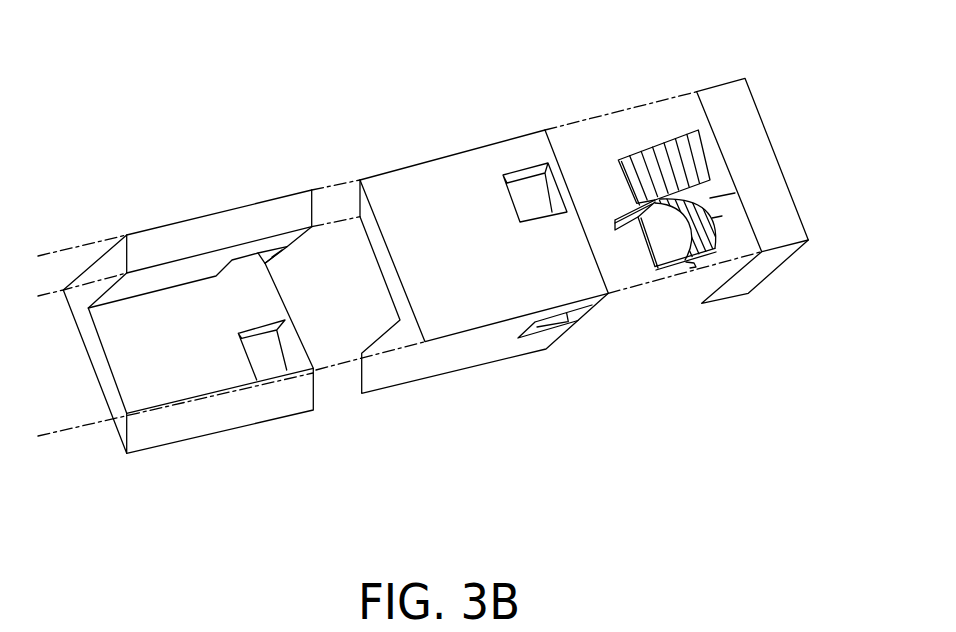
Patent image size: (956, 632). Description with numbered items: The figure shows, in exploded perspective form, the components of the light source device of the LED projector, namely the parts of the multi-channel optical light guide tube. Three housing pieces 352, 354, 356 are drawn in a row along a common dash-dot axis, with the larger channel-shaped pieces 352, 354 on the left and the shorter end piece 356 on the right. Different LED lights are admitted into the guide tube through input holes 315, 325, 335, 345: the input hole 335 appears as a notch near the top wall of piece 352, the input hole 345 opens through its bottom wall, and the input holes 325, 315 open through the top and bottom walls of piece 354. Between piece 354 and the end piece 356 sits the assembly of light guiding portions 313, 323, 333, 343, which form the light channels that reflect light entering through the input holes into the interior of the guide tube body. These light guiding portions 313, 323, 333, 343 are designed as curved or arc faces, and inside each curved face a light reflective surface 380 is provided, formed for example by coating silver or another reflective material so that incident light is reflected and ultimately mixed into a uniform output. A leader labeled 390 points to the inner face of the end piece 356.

The first housing half 352 is at (204, 216).
The second housing half 354 is at (441, 158).
The end cap 356 is at (716, 86).
The input hole 335 is at (250, 267).
The input hole 345 is at (268, 358).
The input hole 325 is at (530, 192).
The input hole 315 is at (555, 322).
The light guiding portion 333 is at (615, 220).
The light guiding portion 323 is at (658, 152).
The light reflective surface 380 is at (664, 153).
The light guiding portion 343 is at (639, 232).
The inner surface 390 is at (735, 193).
The light guiding portion 313 is at (722, 216).